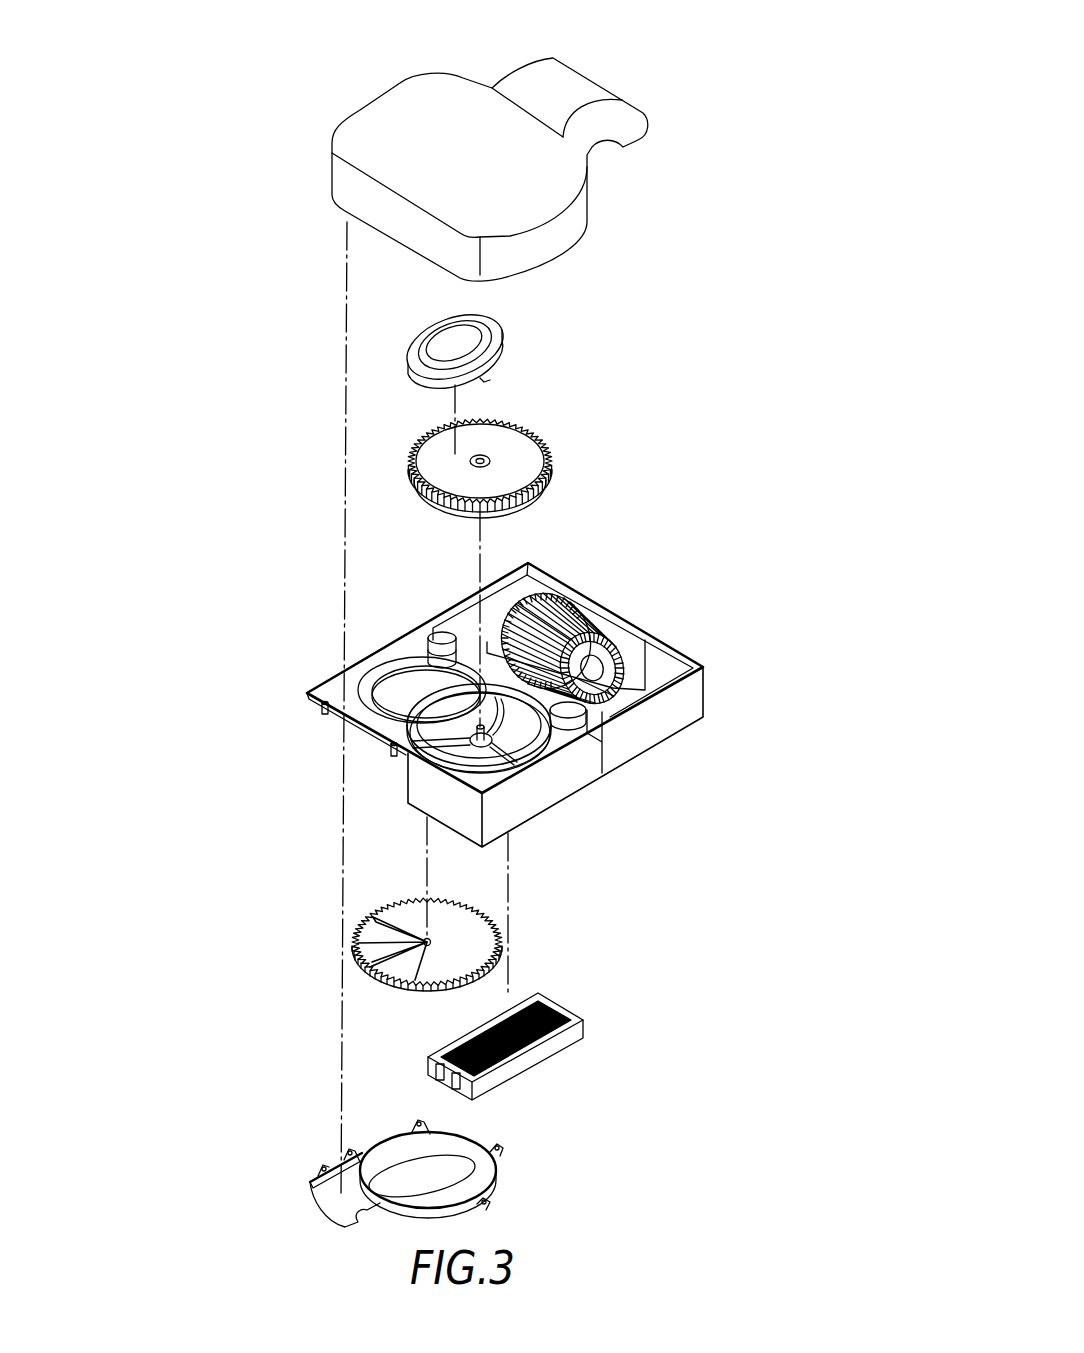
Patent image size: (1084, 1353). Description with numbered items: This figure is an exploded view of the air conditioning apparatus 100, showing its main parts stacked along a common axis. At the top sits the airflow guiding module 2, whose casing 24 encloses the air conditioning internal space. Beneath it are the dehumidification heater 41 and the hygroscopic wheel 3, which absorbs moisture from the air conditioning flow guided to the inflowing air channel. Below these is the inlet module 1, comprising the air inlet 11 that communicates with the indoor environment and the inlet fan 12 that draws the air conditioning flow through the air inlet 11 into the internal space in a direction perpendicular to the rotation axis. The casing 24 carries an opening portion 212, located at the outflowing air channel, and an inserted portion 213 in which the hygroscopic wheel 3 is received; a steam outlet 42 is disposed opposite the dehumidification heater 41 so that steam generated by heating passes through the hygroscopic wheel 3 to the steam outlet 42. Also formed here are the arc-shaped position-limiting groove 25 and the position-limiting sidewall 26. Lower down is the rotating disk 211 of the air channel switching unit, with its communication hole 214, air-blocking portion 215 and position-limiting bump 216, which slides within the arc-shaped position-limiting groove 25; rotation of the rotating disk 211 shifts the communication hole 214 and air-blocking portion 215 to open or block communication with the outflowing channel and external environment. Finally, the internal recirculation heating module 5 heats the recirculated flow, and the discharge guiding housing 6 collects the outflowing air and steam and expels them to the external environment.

The air conditioning apparatus 100 is at (789, 113).
The inlet module 1 is at (768, 579).
The airflow guiding module 2 is at (387, 93).
The hygroscopic wheel 3 is at (523, 452).
The internal recirculation heating module 5 is at (585, 1025).
The discharge guiding housing 6 is at (483, 1170).
The air inlet 11 is at (650, 677).
The inlet fan 12 is at (580, 605).
The casing 24 is at (325, 687).
The arc-shaped position-limiting groove 25 is at (321, 708).
The position-limiting sidewall 26 is at (393, 722).
The dehumidification heater 41 is at (480, 325).
The steam outlet 42 is at (440, 723).
The rotating disk 211 is at (342, 914).
The opening portion 212 is at (398, 710).
The inserted portion 213 is at (537, 763).
The communication hole 214 is at (339, 961).
The air-blocking portion 215 is at (413, 918).
The position-limiting bump 216 is at (377, 912).